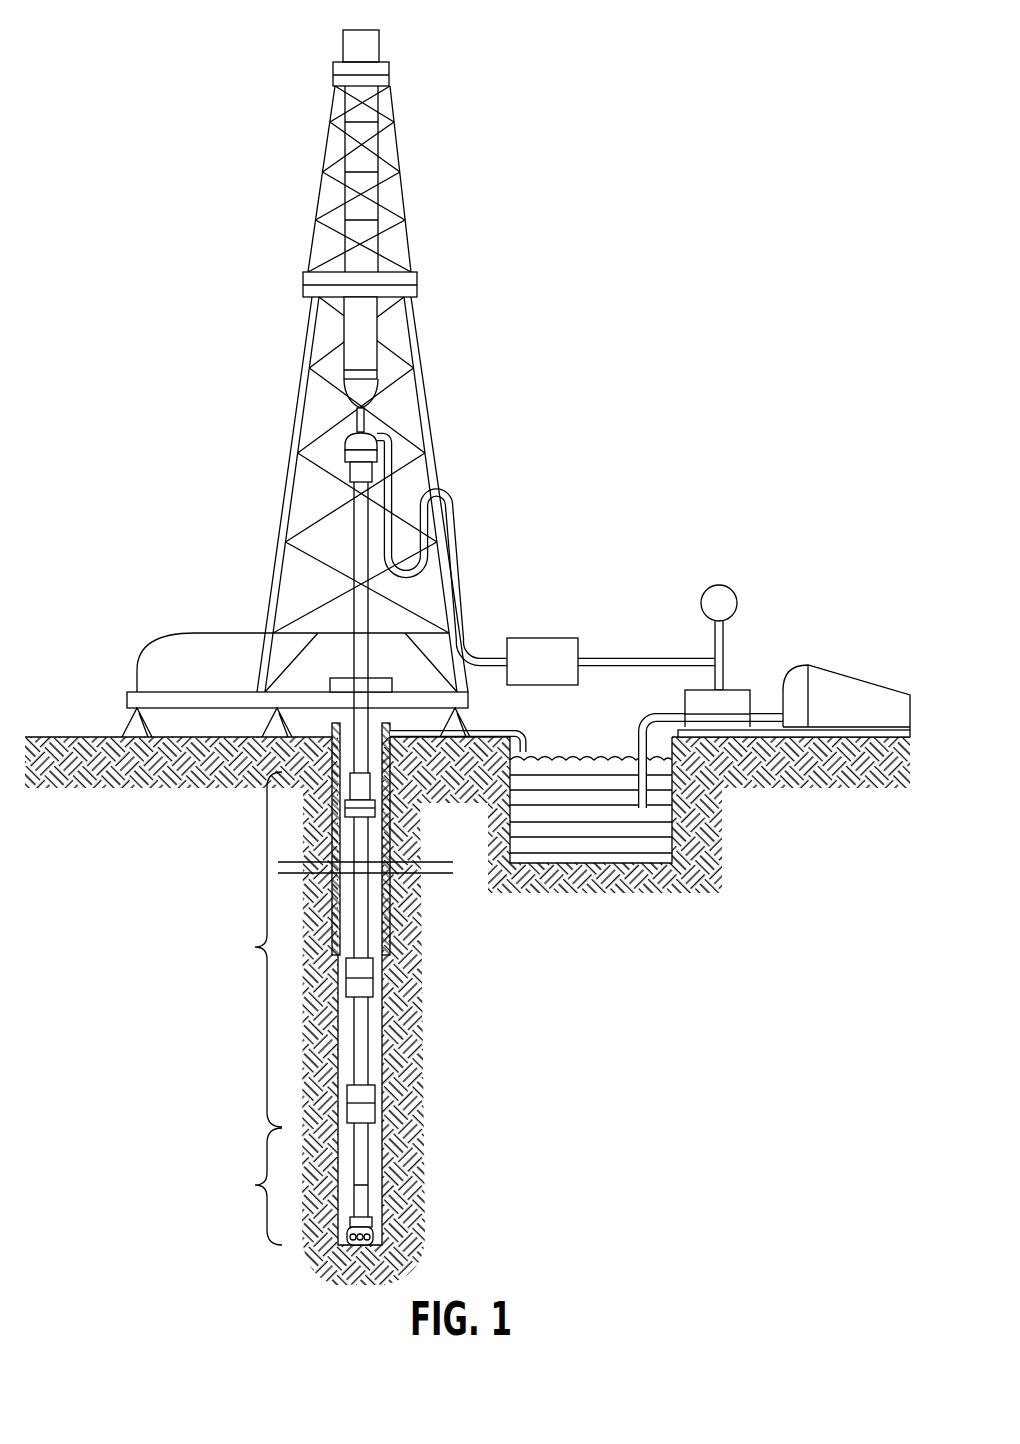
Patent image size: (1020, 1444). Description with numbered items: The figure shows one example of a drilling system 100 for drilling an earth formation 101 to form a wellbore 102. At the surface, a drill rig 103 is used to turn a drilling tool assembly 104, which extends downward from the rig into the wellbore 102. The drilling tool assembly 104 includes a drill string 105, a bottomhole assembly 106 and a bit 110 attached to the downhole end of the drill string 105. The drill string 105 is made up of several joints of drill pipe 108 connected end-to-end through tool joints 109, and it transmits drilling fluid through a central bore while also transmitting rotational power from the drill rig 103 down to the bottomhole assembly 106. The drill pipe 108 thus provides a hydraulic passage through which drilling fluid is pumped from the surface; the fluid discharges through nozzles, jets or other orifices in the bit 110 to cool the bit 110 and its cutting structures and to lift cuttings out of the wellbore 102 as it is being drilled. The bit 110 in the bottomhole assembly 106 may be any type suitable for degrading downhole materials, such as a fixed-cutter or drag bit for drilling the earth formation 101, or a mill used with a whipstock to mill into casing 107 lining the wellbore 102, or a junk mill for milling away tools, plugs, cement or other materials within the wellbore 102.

The drilling system 100 is at (520, 68).
The earth formation 101 is at (483, 778).
The wellbore 102 is at (393, 1082).
The drill rig 103 is at (295, 397).
The drilling tool assembly 104 is at (396, 934).
The drill string 105 is at (255, 947).
The bottomhole assembly 106 is at (255, 1185).
The casing 107 is at (390, 910).
The drill pipe 108 is at (370, 1043).
The tool joints 109 is at (372, 990).
The bit 110 is at (375, 1237).